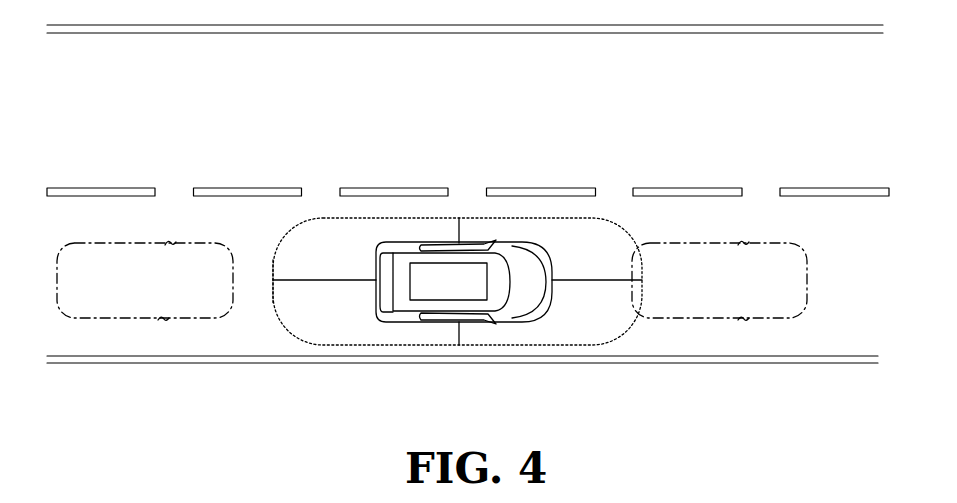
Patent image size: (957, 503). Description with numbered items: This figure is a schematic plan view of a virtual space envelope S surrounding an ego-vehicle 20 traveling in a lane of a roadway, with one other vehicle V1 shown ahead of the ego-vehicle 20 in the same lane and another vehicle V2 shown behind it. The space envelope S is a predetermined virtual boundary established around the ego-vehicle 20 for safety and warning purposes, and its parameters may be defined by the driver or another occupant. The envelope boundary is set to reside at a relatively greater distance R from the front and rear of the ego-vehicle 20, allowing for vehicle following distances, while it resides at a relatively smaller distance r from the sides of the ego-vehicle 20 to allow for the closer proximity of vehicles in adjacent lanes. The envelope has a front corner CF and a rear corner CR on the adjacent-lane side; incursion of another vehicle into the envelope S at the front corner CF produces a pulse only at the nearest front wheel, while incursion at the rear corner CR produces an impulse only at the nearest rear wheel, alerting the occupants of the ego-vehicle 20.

The ego-vehicle 20 is at (447, 285).
The virtual space envelope S is at (337, 210).
The front corner of the space envelope CF is at (590, 217).
The rear corner of the space envelope CR is at (280, 322).
The distance from front and rear of the ego-vehicle R is at (345, 280).
The distance from sides of the ego-vehicle r is at (463, 236).
The preceding vehicle V1 is at (122, 295).
The following vehicle V2 is at (720, 292).